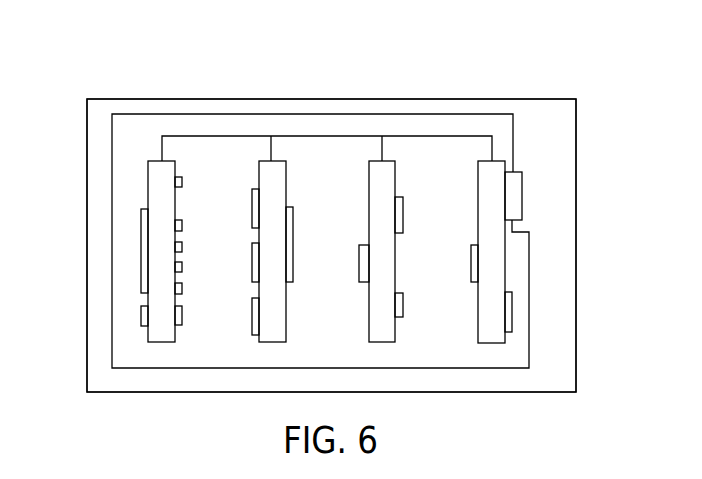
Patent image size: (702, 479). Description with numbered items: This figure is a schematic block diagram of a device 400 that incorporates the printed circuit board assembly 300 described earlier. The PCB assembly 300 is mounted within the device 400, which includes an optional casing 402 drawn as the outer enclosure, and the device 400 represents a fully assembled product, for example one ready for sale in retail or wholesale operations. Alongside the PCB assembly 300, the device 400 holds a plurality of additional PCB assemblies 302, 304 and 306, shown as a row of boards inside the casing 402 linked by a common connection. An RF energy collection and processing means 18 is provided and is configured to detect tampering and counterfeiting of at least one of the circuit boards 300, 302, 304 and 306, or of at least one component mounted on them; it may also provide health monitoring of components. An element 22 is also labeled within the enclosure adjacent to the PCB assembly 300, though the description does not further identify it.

The device 400 is at (127, 400).
The casing 402 is at (86, 273).
The circuit board 22 is at (530, 327).
The RF energy collection and processing means 18 is at (522, 192).
The PCB assembly 300 is at (477, 150).
The additional PCB assembly 302 is at (145, 150).
The additional PCB assembly 304 is at (263, 150).
The additional PCB assembly 306 is at (367, 148).